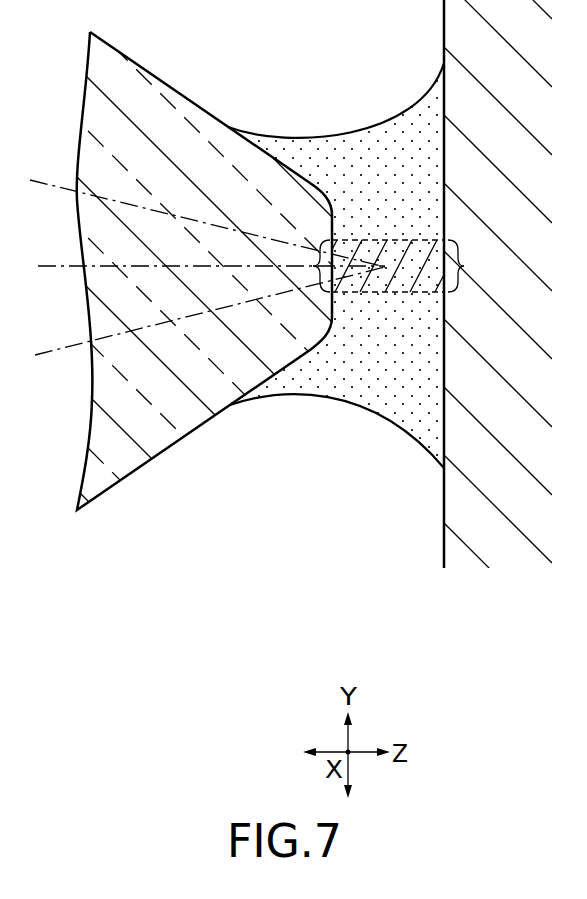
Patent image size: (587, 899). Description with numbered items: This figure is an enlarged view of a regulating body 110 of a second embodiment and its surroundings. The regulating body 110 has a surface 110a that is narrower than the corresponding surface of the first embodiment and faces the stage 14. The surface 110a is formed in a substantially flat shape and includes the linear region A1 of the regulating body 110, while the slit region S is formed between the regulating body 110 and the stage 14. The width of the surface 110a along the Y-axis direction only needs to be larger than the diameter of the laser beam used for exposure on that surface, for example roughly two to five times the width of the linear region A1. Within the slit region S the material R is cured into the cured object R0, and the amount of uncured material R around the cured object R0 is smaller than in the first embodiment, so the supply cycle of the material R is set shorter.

The regulating body 110 is at (178, 97).
The surface 110a is at (350, 330).
The stage 14 is at (444, 510).
The material R is at (354, 116).
The cured object R0 is at (402, 250).
The linear region A1 is at (306, 266).
The slit region S is at (468, 266).